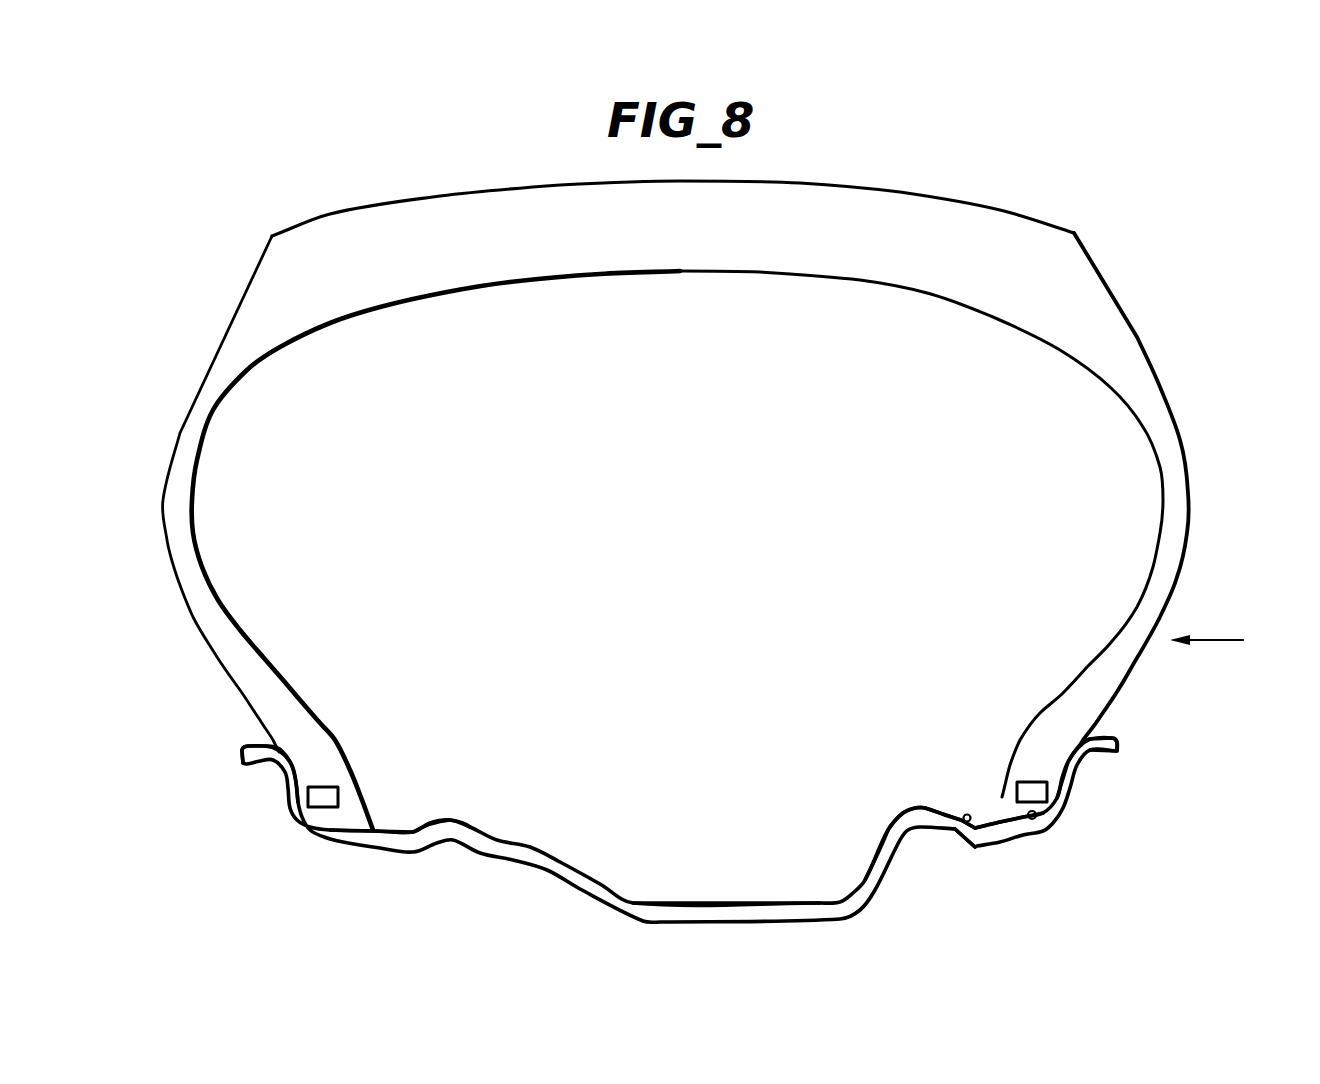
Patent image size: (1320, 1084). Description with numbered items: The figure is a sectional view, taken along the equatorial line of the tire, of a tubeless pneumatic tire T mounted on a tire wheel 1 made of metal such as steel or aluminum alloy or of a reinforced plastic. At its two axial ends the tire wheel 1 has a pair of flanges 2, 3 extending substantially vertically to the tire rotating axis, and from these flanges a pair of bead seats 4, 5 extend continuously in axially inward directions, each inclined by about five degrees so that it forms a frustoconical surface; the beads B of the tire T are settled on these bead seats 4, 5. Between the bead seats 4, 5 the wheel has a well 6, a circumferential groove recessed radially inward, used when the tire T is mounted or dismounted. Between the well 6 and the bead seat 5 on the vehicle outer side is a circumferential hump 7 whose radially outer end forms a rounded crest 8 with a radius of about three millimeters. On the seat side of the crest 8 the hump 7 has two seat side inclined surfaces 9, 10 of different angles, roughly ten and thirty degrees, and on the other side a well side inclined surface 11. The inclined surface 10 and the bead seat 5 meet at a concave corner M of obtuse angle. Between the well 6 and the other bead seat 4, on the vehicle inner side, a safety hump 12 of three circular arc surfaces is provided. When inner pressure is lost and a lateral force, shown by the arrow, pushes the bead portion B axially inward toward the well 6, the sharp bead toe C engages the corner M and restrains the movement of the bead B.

The tire wheel 1 is at (550, 881).
The flange 2 is at (275, 766).
The flange 3 is at (1098, 746).
The bead seat 4 is at (395, 830).
The bead seat 5 is at (1035, 820).
The well 6 is at (700, 903).
The hump 7 is at (896, 799).
The crest 8 is at (918, 807).
The seat side inclined surface 9 is at (943, 812).
The seat side inclined surface 10 is at (957, 826).
The well side inclined surface 11 is at (893, 825).
The hump 12 is at (460, 821).
The pneumatic tire T is at (1137, 338).
The bead B is at (988, 822).
The bead toe C is at (985, 817).
The corner M is at (969, 845).